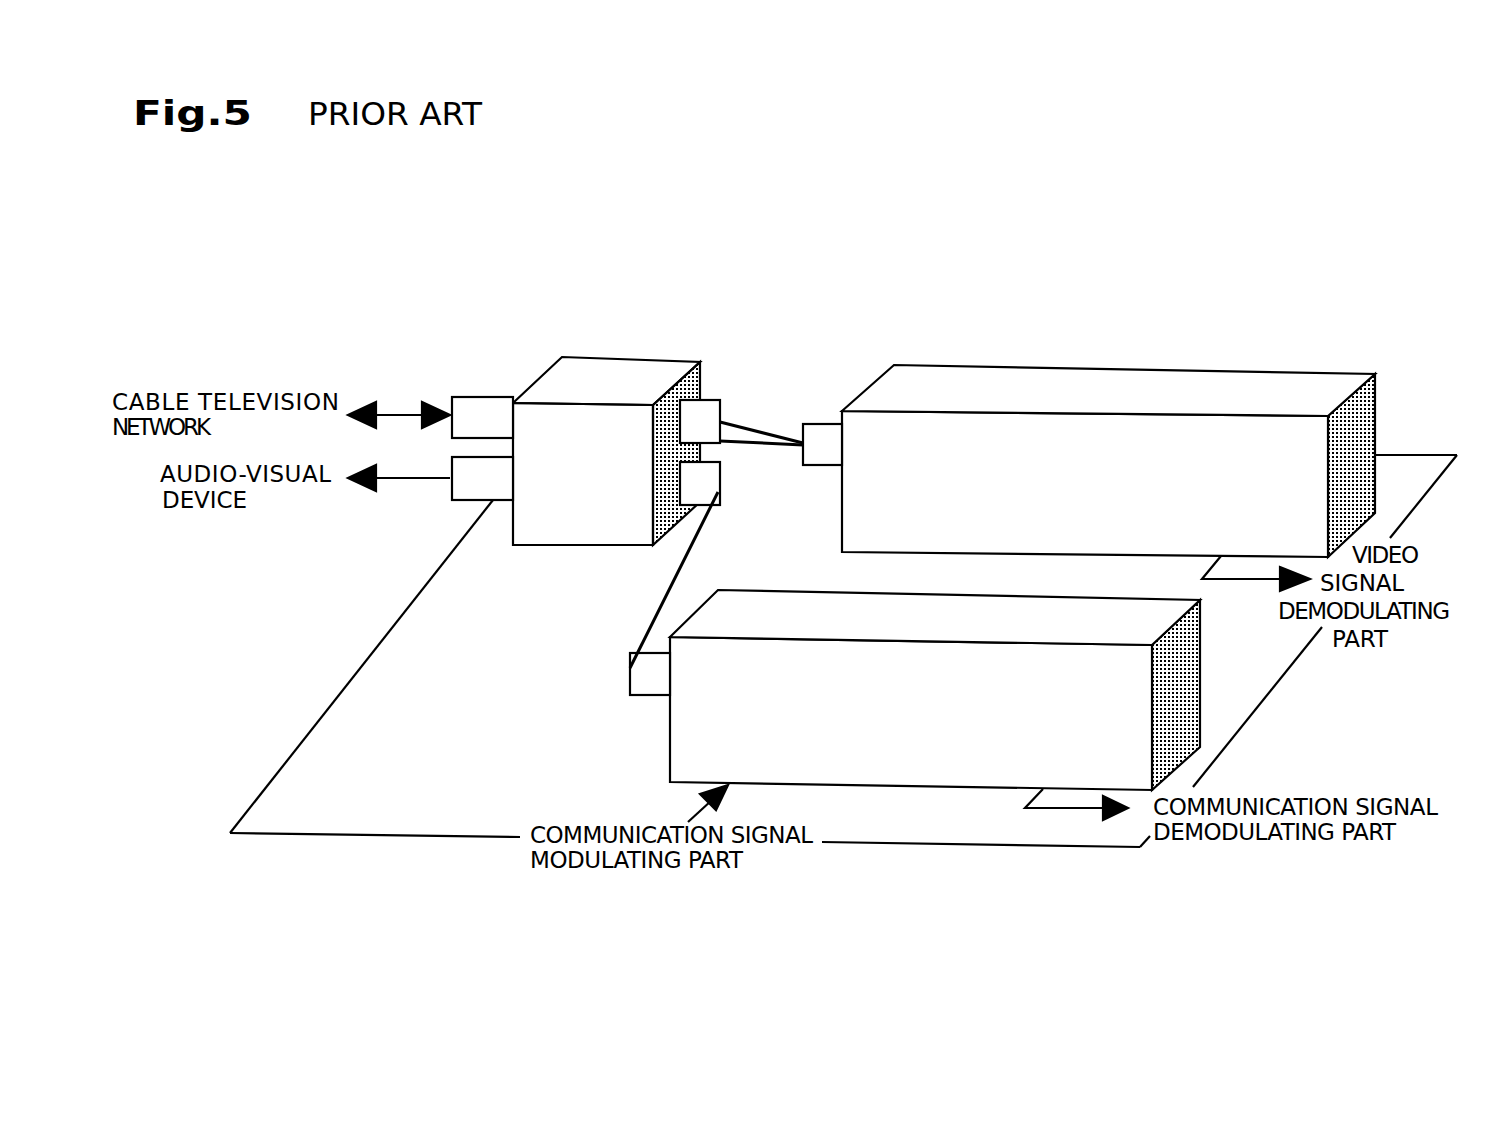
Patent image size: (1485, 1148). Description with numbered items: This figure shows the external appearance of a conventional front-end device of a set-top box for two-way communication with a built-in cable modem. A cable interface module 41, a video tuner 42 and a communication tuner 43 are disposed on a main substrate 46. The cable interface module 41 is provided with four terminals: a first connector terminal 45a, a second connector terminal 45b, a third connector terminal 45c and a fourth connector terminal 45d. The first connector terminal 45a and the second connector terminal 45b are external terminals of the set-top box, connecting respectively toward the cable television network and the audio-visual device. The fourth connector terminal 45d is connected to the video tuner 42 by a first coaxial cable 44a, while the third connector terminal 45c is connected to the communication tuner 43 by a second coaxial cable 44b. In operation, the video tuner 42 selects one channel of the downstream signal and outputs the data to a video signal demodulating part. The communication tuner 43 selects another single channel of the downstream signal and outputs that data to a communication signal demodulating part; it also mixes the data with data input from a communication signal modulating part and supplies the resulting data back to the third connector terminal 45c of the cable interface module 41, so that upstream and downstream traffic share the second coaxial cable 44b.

The cable interface module 41 is at (597, 380).
The video tuner 42 is at (1130, 368).
The communication tuner 43 is at (950, 788).
The first coaxial cable 44a is at (763, 423).
The second coaxial cable 44b is at (655, 610).
The first connector terminal 45a is at (493, 417).
The second connector terminal 45b is at (457, 505).
The third connector terminal 45c is at (680, 507).
The fourth connector terminal 45d is at (700, 420).
The main substrate 46 is at (383, 668).